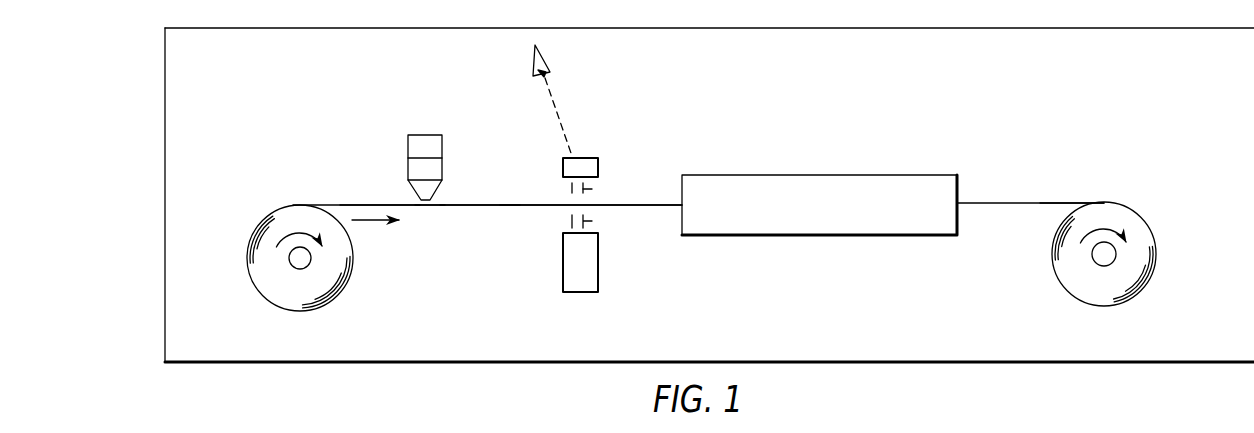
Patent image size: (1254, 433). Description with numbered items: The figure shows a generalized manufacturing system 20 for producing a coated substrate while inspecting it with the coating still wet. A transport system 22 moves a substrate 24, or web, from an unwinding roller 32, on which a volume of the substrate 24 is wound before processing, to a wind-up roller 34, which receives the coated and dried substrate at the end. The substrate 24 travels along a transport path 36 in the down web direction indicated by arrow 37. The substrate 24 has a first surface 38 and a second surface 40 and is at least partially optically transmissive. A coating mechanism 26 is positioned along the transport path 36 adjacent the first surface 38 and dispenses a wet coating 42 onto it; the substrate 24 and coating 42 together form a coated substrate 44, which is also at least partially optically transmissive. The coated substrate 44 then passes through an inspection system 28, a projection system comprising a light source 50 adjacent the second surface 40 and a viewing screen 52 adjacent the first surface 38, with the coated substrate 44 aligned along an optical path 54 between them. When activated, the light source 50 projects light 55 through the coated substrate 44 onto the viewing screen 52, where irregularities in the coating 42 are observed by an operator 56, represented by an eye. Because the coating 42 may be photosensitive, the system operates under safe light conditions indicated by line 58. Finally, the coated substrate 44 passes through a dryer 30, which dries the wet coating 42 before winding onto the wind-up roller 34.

The manufacturing system 20 is at (164, 99).
The transport system 22 is at (246, 263).
The substrate 24 is at (332, 202).
The coating mechanism 26 is at (428, 136).
The inspection system 28 is at (551, 256).
The dryer 30 is at (859, 238).
The unwinding roller 32 is at (323, 300).
The wind-up roller 34 is at (1070, 278).
The transport path 36 is at (1058, 194).
The arrow 37 is at (370, 221).
The first surface 38 is at (362, 205).
The second surface 40 is at (463, 207).
The coating 42 is at (438, 202).
The coated substrate 44 is at (510, 205).
The light source 50 is at (587, 278).
The viewing screen 52 is at (582, 164).
The optical path 54 is at (592, 221).
The light 55 is at (592, 189).
The operator 56 is at (547, 57).
The safe light conditions line 58 is at (1163, 363).